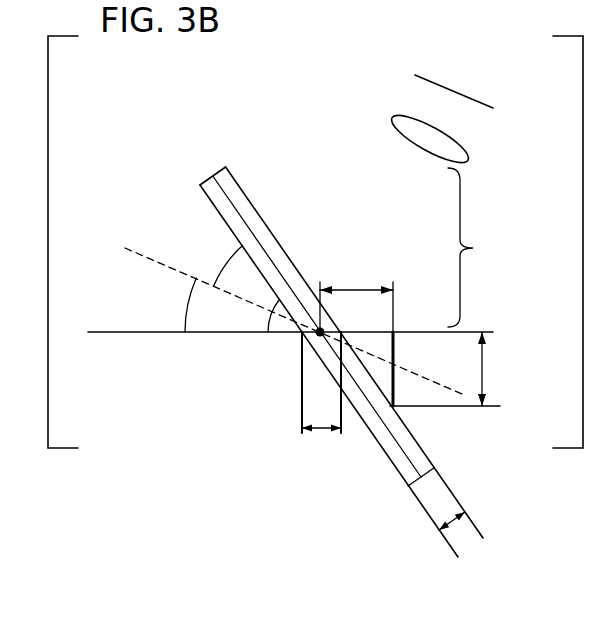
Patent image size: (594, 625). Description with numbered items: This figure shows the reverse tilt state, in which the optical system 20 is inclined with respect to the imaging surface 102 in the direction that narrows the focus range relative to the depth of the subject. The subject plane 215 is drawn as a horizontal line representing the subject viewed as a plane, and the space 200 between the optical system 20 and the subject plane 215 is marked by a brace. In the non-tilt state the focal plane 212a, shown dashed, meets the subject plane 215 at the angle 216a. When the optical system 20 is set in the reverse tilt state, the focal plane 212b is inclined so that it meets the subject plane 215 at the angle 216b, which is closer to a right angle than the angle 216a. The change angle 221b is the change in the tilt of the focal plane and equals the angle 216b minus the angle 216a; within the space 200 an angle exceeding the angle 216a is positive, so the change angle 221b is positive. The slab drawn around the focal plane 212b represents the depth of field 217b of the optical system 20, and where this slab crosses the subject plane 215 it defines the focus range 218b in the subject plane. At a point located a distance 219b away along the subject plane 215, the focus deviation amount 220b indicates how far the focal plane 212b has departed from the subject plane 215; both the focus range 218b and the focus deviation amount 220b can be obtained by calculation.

The optical system 20 is at (402, 116).
The imaging surface 102 is at (467, 93).
The space 200 is at (484, 247).
The focal plane 212a is at (147, 257).
The focal plane 212b is at (218, 178).
The subject plane 215 is at (116, 332).
The angle 216a is at (186, 308).
The angle 216b is at (269, 323).
The depth of field 217b is at (457, 526).
The focus range 218b is at (317, 434).
The distance 219b is at (352, 288).
The focus deviation amount 220b is at (485, 367).
The change angle 221b is at (223, 263).